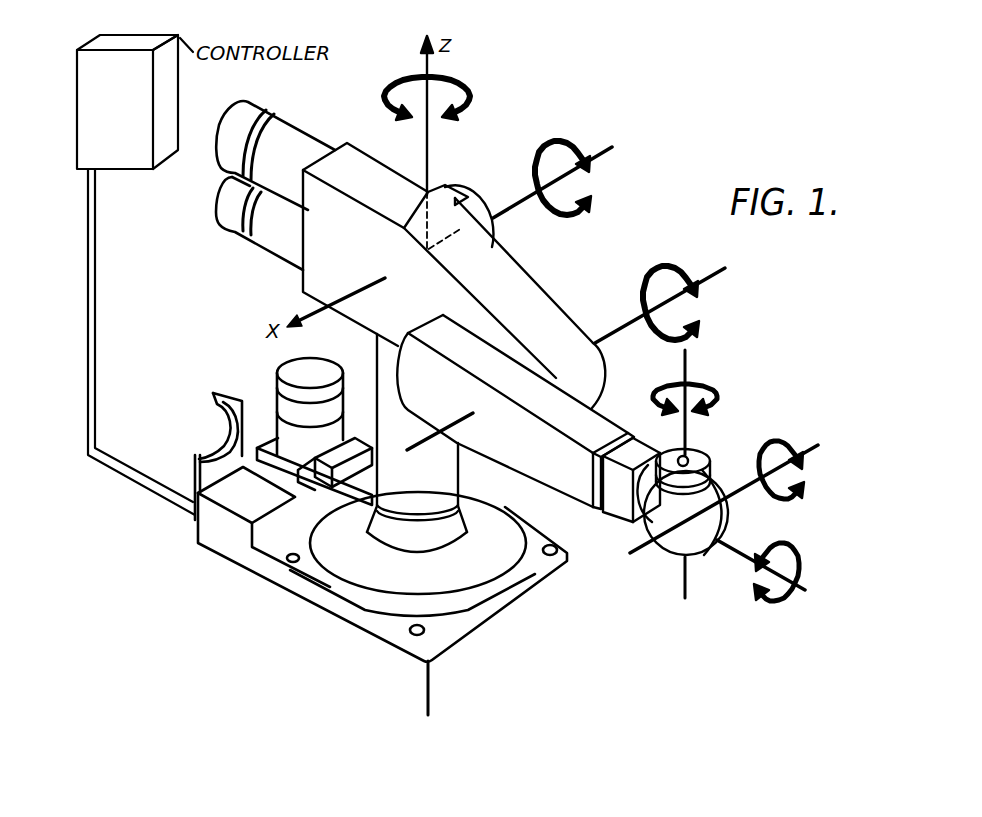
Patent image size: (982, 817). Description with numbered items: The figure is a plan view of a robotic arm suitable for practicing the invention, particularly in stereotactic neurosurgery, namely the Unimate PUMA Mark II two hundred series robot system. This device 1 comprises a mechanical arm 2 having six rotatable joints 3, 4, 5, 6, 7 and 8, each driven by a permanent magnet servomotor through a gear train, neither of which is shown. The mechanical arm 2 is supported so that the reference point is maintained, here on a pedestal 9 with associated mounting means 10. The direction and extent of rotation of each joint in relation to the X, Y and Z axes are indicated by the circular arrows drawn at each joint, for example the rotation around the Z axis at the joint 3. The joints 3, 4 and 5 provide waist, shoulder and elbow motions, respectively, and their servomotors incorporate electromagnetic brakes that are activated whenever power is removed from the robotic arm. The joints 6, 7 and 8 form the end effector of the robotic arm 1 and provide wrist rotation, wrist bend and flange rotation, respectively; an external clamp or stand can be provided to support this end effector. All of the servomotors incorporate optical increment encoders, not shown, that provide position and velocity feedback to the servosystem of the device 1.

The device 1 is at (281, 262).
The mechanical arm 2 is at (517, 288).
The rotatable joint 3 is at (358, 290).
The rotatable joint 4 is at (490, 200).
The rotatable joint 5 is at (607, 333).
The rotatable joint 6 is at (690, 458).
The rotatable joint 7 is at (744, 497).
The rotatable joint 8 is at (687, 580).
The pedestal 9 is at (445, 473).
The mounting means 10 is at (473, 630).